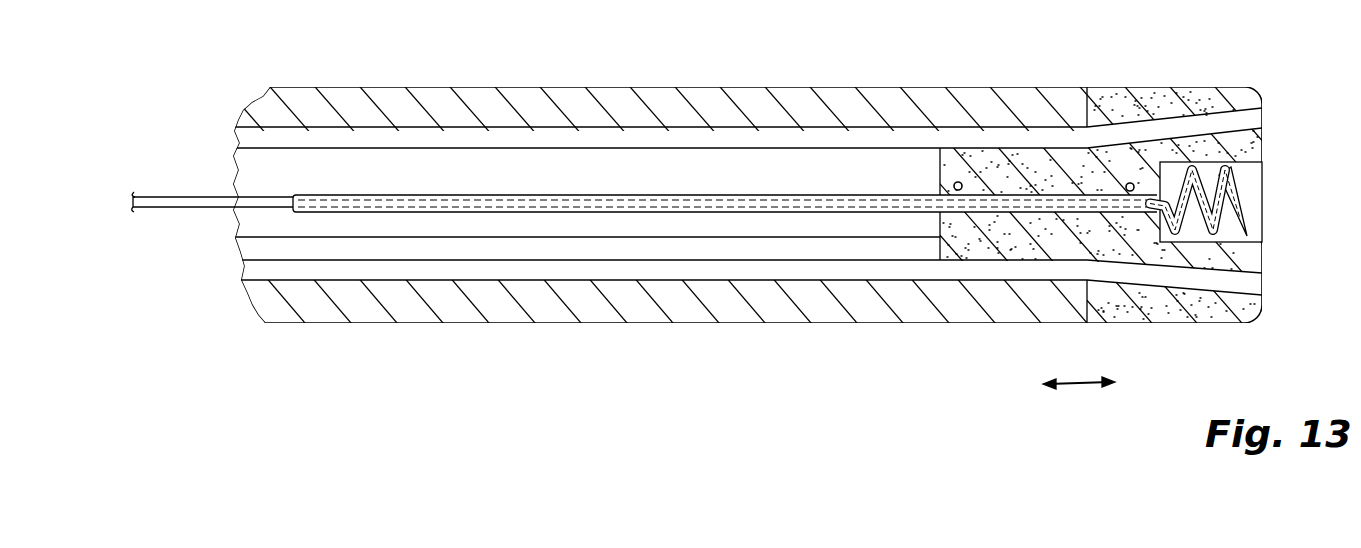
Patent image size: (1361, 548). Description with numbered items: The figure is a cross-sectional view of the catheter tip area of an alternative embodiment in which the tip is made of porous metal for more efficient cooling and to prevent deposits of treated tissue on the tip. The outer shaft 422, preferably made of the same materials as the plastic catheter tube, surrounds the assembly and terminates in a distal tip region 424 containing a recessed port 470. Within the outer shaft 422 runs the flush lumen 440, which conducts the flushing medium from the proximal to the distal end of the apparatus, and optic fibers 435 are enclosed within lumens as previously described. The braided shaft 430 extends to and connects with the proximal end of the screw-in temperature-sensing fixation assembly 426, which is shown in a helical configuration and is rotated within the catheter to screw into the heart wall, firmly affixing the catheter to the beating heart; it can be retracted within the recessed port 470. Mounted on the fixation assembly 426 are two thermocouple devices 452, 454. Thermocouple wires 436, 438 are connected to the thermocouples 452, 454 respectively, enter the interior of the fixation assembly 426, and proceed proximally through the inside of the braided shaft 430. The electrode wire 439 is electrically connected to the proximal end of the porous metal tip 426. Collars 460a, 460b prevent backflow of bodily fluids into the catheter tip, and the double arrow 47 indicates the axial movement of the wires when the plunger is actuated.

The outer shaft 422 is at (683, 297).
The distal end cap 424 is at (1188, 97).
The screw-in temperature-sensing fixation assembly 426 is at (1233, 198).
The braided shaft 430 is at (767, 213).
The optic fibers 435 is at (777, 133).
The thermocouple wire 436 is at (195, 197).
The thermocouple wire 438 is at (200, 207).
The electrode wire 439 is at (508, 237).
The flush lumen 440 is at (550, 160).
The thermocouple device 452 is at (1250, 221).
The thermocouple device 454 is at (1230, 173).
The collar 460a is at (957, 182).
The collar 460b is at (1130, 183).
The recessed port 470 is at (1247, 235).
The double arrow 47 is at (1075, 385).